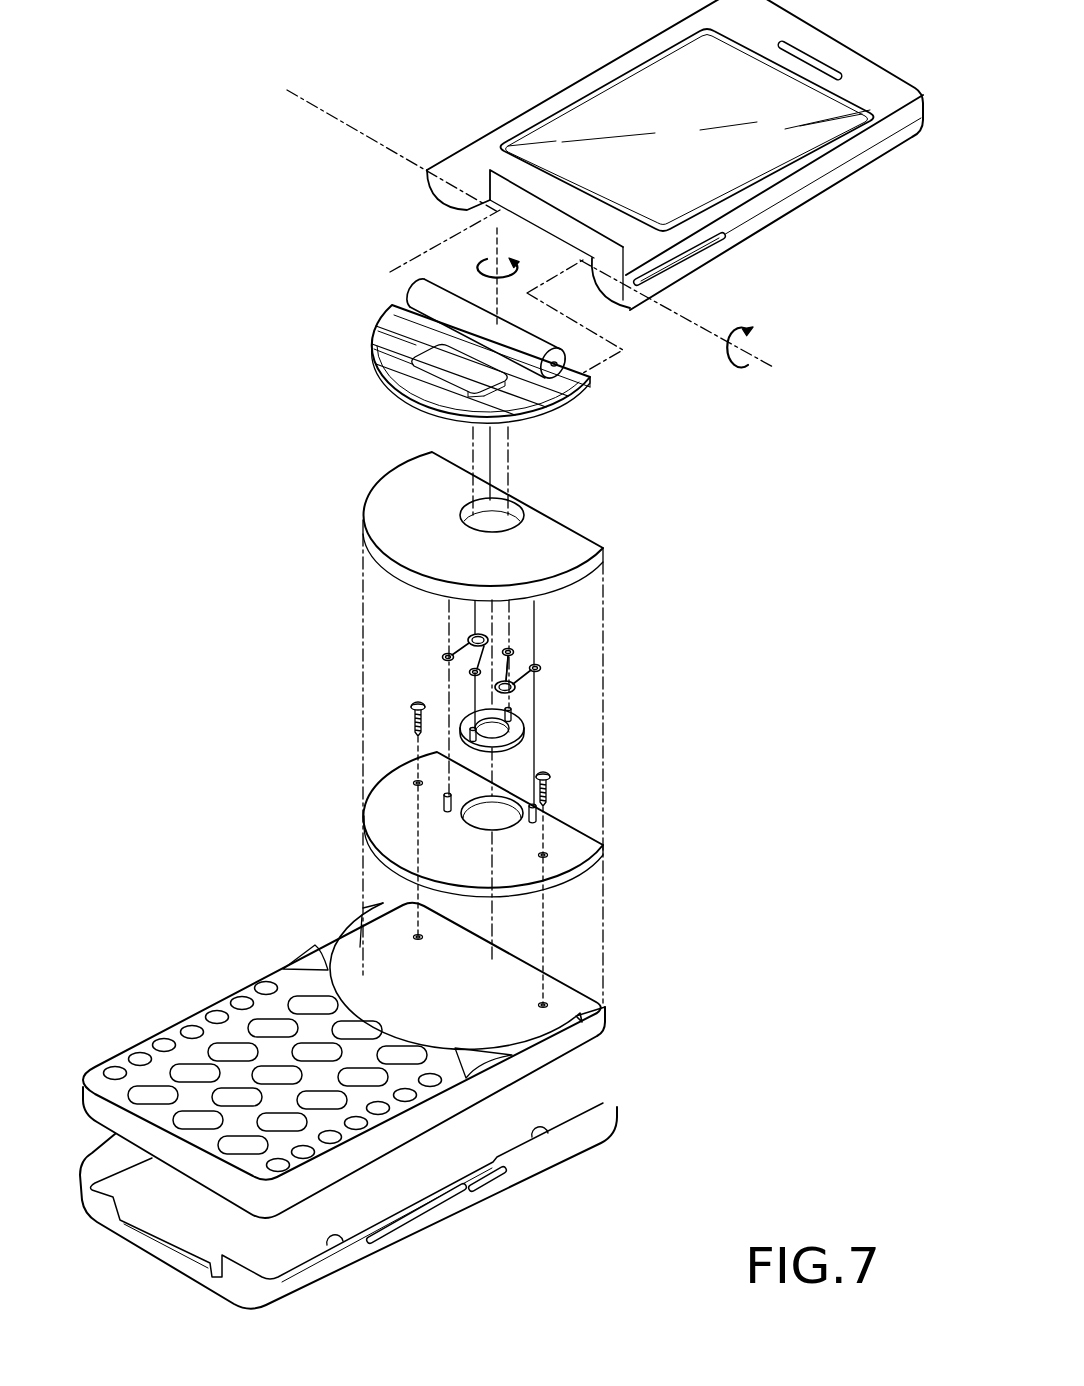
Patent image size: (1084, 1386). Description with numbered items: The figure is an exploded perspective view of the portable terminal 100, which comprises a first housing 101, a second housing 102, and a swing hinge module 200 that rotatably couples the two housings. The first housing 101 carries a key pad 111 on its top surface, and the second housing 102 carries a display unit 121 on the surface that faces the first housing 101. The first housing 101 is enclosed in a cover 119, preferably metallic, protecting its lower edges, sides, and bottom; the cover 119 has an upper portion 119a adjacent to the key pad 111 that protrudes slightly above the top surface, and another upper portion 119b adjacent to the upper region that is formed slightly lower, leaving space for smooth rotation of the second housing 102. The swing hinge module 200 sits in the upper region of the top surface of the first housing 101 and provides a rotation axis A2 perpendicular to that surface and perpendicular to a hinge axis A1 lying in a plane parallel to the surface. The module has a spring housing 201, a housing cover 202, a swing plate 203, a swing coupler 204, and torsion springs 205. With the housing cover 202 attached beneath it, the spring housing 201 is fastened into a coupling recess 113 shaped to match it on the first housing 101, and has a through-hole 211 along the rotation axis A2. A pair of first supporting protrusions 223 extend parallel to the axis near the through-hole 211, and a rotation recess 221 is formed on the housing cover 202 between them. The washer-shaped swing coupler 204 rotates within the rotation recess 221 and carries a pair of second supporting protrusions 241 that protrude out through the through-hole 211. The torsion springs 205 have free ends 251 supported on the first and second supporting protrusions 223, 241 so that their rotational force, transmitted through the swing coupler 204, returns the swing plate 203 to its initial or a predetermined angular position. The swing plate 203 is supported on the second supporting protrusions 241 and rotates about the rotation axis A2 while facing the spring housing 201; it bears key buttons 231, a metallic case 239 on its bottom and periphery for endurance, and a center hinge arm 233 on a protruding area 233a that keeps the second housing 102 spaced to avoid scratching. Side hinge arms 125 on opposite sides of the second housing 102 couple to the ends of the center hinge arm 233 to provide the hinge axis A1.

The portable terminal 100 is at (158, 157).
The first housing 101 is at (402, 1046).
The second housing 102 is at (659, 155).
The key pad 111 is at (223, 1047).
The coupling recess 113 is at (570, 990).
The cover 119 is at (363, 1218).
The upper portion of cover 119a is at (337, 1240).
The upper portion of cover 119b is at (547, 1134).
The display unit 121 is at (581, 114).
The side hinge arms 125 is at (451, 161).
The swing hinge module 200 is at (704, 470).
The spring housing 201 is at (543, 513).
The housing cover 202 is at (499, 852).
The swing plate 203 is at (484, 348).
The swing coupler 204 is at (504, 700).
The torsion springs 205 is at (438, 648).
The through-hole 211 is at (520, 503).
The rotation recess 221 is at (480, 808).
The first supporting protrusions 223 is at (444, 801).
The key buttons 231 is at (420, 393).
The center hinge arm 233 is at (418, 297).
The protruding area 233a is at (583, 373).
The metallic case 239 is at (378, 382).
The second supporting protrusions 241 is at (468, 732).
The free ends 251 is at (538, 666).
The hinge axis A1 is at (766, 362).
The rotation axis A2 is at (494, 240).